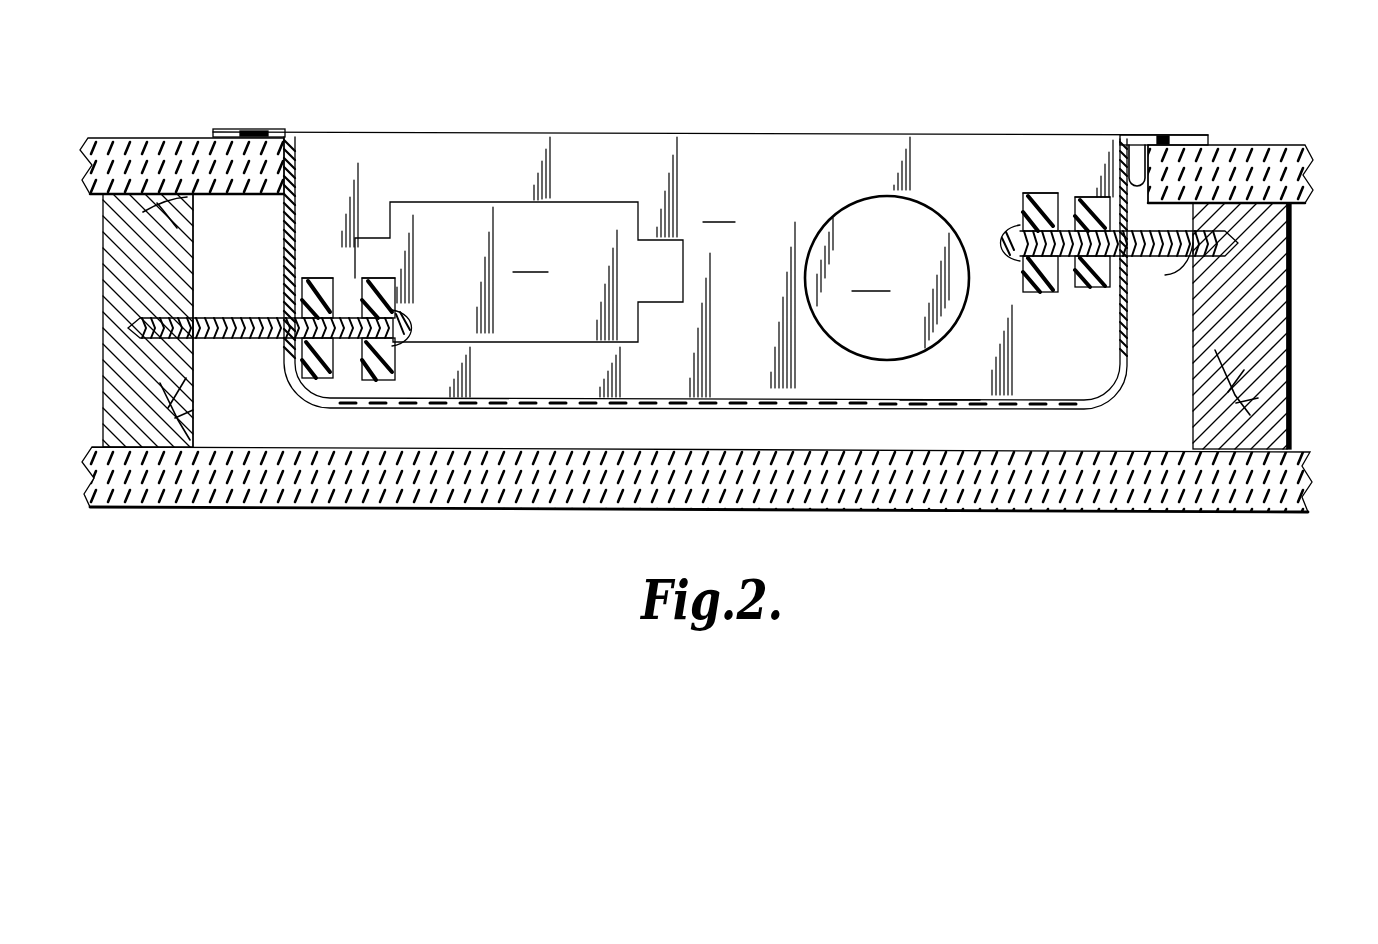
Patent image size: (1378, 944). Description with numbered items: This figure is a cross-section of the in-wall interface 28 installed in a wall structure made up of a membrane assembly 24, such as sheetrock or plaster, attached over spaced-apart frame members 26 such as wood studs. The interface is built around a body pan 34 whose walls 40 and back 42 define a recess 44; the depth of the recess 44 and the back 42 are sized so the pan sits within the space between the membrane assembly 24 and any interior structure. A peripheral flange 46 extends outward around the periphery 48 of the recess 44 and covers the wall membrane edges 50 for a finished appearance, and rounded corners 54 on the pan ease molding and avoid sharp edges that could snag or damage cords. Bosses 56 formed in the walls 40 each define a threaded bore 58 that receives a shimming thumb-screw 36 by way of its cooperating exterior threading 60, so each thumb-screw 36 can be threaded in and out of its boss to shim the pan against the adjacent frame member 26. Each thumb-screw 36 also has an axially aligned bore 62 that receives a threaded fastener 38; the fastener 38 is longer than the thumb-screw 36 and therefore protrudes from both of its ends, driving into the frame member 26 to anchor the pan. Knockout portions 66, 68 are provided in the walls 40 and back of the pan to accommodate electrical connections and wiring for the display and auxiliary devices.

The membrane assembly 24 is at (146, 155).
The frame members 26 is at (160, 383).
The in-wall interface 28 is at (712, 410).
The body pan 34 is at (940, 410).
The shimming thumb-screws 36 is at (368, 277).
The threaded fasteners 38 is at (406, 318).
The walls 40 is at (1130, 323).
The back 42 is at (836, 410).
The recess 44 is at (786, 168).
The peripheral flange 46 is at (285, 258).
The periphery 48 is at (1107, 135).
The wall membrane edges 50 is at (296, 178).
The rounded corners 54 is at (305, 400).
The bosses 56 is at (330, 402).
The threaded bore 58 is at (322, 278).
The exterior threading 60 is at (273, 350).
The axially aligned bore 62 is at (260, 343).
The knockout portion 66 is at (887, 278).
The knockout portion 68 is at (519, 272).